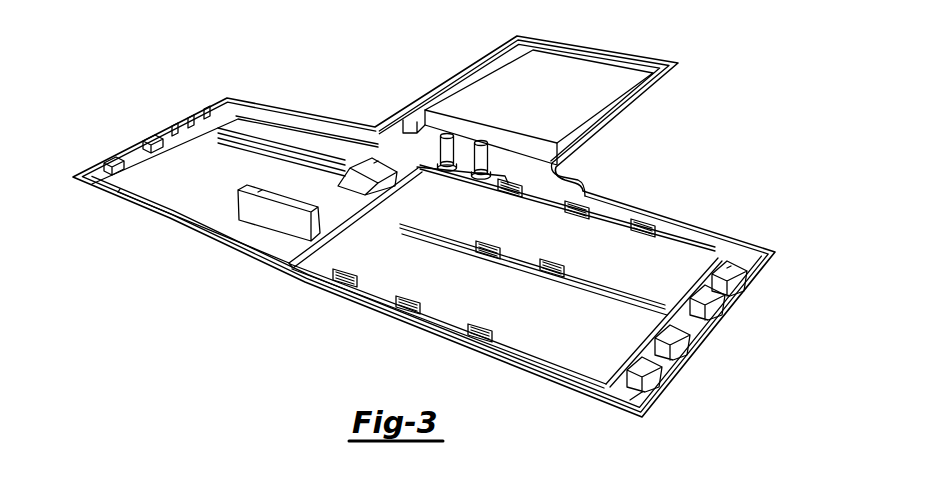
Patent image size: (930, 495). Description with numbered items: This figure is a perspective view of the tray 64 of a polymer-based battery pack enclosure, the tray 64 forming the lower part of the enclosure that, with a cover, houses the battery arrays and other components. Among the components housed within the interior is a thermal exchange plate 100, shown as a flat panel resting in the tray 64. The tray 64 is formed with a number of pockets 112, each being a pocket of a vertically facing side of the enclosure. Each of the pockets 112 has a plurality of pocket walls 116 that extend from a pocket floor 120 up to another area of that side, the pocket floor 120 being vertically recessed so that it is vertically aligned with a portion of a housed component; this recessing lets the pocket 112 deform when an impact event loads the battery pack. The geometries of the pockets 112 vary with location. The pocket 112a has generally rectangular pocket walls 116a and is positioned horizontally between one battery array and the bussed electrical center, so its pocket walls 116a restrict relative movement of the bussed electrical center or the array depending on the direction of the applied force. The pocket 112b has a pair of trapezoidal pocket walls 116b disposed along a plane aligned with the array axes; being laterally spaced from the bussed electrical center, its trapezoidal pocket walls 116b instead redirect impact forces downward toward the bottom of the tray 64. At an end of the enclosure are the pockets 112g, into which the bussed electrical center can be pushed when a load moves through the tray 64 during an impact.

The tray 64 is at (657, 388).
The thermal exchange plate 100 is at (685, 262).
The pockets 112 is at (722, 301).
The pocket 112a is at (277, 226).
The pocket 112b is at (368, 196).
The pockets 112g is at (151, 141).
The pocket walls 116 is at (642, 382).
The pocket walls 116a is at (253, 218).
The pocket walls 116b is at (383, 185).
The pocket floor 120 is at (373, 162).